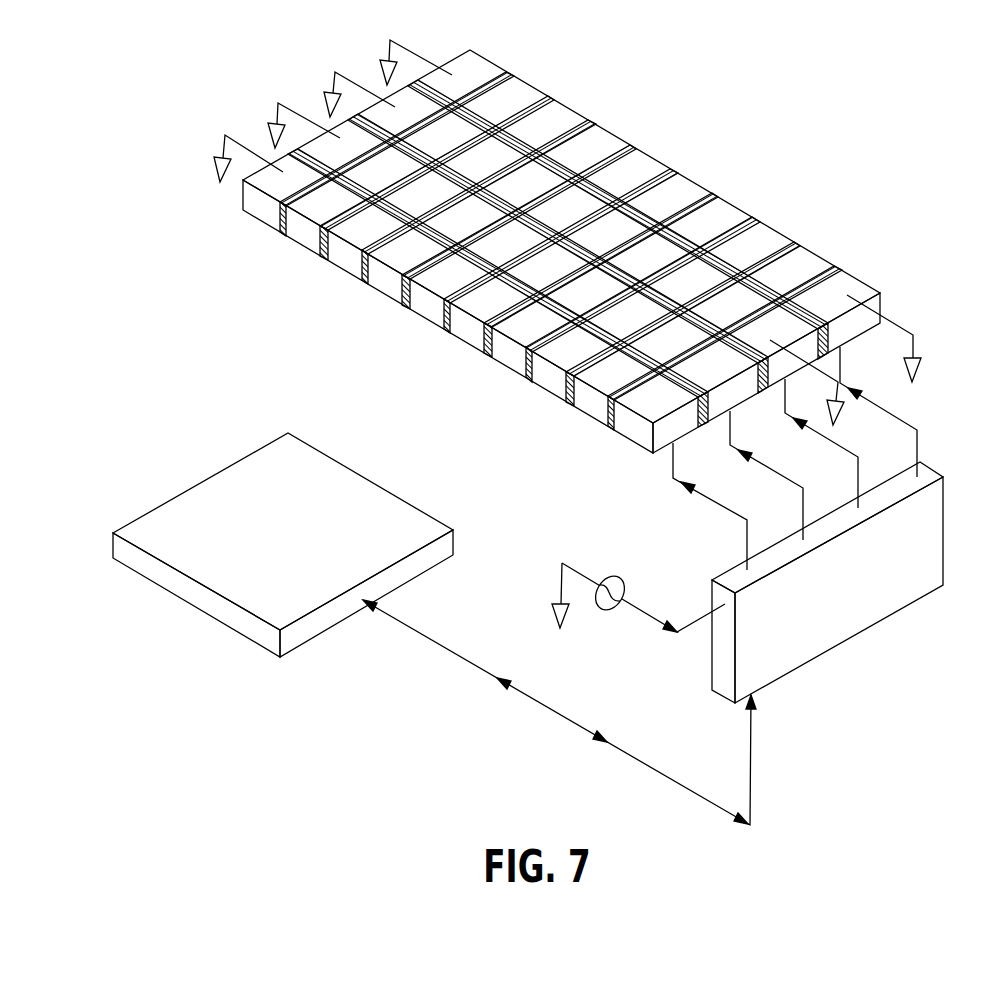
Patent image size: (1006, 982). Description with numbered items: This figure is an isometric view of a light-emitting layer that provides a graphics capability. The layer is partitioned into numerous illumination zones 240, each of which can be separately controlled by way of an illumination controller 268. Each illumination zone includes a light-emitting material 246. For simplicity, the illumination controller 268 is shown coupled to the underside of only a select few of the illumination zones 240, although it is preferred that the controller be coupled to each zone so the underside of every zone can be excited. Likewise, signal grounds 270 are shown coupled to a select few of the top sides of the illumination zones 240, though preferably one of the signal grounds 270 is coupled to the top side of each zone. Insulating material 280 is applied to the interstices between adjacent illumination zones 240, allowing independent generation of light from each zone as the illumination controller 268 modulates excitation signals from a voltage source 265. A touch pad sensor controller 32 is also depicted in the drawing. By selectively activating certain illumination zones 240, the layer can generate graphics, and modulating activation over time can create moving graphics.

The touch pad sensor controller 32 is at (283, 545).
The illumination zones 240 is at (595, 150).
The light-emitting material 246 is at (507, 355).
The voltage source 265 is at (608, 578).
The illumination controller 268 is at (827, 582).
The signal grounds 270 is at (217, 153).
The insulating material 280 is at (282, 228).